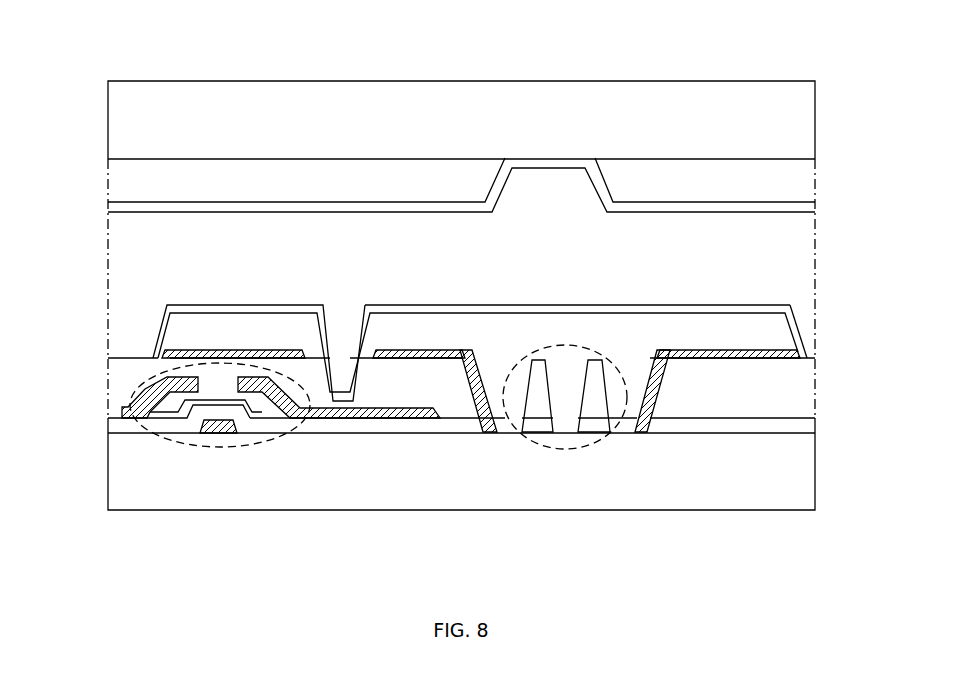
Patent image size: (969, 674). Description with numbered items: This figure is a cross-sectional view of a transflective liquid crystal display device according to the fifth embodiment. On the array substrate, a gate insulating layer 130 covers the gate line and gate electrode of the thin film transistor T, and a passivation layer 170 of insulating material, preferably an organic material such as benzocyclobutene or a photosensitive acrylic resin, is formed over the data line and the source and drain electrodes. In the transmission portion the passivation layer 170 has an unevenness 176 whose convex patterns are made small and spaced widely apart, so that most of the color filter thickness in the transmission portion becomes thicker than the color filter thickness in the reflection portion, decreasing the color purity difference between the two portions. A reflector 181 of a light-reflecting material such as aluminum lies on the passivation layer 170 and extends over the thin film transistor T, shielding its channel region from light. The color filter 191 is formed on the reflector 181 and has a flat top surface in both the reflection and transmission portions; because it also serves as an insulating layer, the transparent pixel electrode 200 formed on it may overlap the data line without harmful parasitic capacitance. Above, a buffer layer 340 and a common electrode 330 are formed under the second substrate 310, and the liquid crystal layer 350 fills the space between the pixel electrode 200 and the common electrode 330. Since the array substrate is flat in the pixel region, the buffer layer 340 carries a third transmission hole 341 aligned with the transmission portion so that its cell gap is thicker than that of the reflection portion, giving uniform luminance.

The second substrate 310 is at (447, 92).
The common electrode 330 is at (352, 210).
The buffer layer 340 is at (234, 172).
The third transmission hole 341 is at (549, 190).
The liquid crystal layer 350 is at (790, 253).
The pixel electrode 200 is at (619, 304).
The gate insulating layer 130 is at (690, 422).
The passivation layer 170 is at (120, 373).
The unevenness 176 is at (571, 450).
The reflector 181 is at (207, 347).
The color filter 191 is at (260, 322).
The thin film transistor T is at (216, 448).